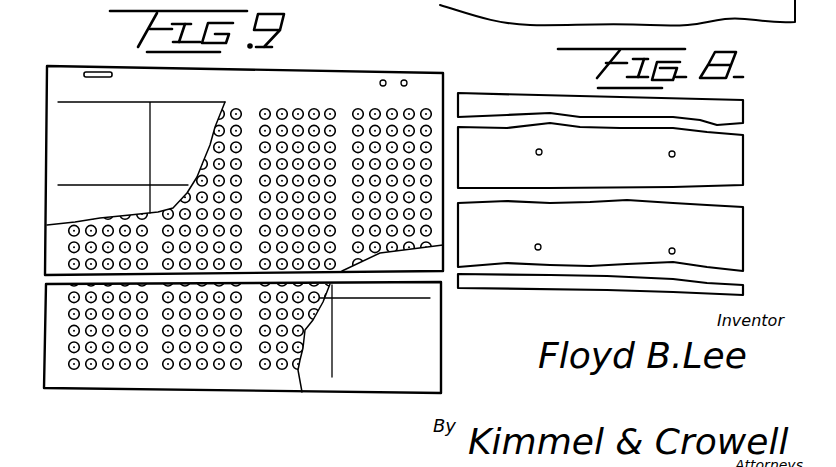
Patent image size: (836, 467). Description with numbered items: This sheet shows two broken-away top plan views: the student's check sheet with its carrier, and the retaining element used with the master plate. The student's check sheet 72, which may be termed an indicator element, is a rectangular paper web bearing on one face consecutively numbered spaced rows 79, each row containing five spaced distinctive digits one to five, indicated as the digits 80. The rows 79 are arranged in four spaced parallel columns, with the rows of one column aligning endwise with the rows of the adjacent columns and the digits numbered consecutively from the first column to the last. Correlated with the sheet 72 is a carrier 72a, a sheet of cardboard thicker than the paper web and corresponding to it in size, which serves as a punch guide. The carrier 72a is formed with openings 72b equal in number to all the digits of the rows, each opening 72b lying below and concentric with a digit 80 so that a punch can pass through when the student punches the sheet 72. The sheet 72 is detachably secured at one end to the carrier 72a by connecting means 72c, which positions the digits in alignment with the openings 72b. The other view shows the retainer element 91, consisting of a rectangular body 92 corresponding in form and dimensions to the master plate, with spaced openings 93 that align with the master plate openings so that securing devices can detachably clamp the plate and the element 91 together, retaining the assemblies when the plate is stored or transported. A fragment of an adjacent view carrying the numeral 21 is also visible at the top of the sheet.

In FIG. 9, the student's check sheet 72 is at (137, 80).
In FIG. 9, the carrier 72a is at (248, 360).
In FIG. 9, the openings 72b is at (218, 362).
In FIG. 9, the connecting means 72c is at (93, 71).
In FIG. 9, the rows 79 is at (63, 125).
In FIG. 9, the digits 80 is at (128, 128).
In FIG. 8, the retainer element 91 is at (732, 225).
In FIG. 8, the rectangular body 92 is at (732, 260).
In FIG. 8, the openings 93 is at (668, 154).
In FIG. 8, the housing 21 is at (471, 7).